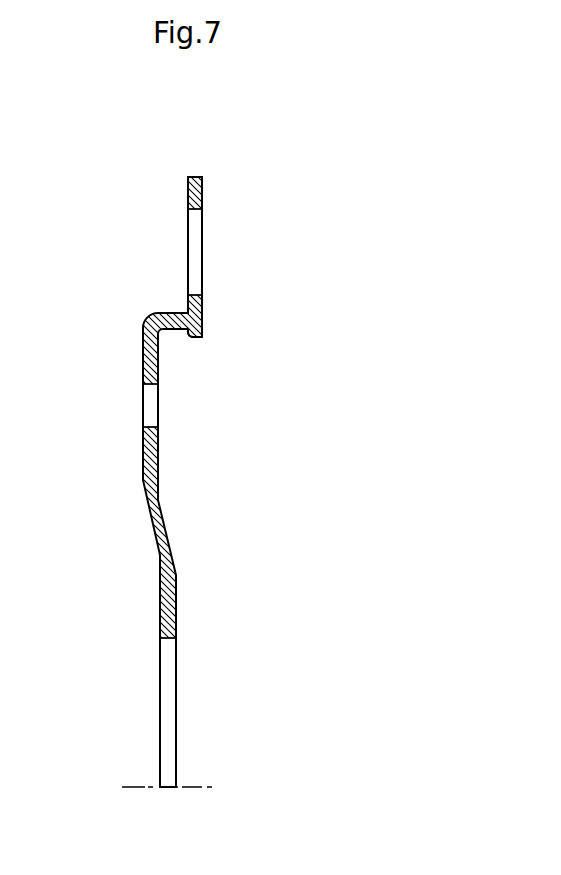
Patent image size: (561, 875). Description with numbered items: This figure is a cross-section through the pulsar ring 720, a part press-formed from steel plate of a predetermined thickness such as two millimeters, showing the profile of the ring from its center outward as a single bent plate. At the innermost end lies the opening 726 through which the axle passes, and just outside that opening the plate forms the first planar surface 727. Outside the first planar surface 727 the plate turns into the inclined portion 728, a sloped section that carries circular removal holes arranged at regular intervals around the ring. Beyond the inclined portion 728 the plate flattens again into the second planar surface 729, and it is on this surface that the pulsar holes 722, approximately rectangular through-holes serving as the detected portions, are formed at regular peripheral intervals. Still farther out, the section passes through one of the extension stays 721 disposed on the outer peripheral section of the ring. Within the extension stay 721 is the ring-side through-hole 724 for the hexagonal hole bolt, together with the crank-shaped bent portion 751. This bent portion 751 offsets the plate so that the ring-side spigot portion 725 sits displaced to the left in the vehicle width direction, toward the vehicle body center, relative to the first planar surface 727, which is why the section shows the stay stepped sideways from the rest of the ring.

The pulsar ring 720 is at (288, 189).
The extension stay 721 is at (187, 195).
The ring-side through-hole 724 is at (182, 228).
The crank-shaped bent portion 751 is at (151, 304).
The ring-side spigot portion 725 is at (193, 347).
The second planar surface 729 is at (150, 355).
The pulsar hole 722 is at (143, 407).
The inclined portion 728 is at (150, 520).
The first planar surface 727 is at (163, 600).
The opening 726 is at (156, 704).